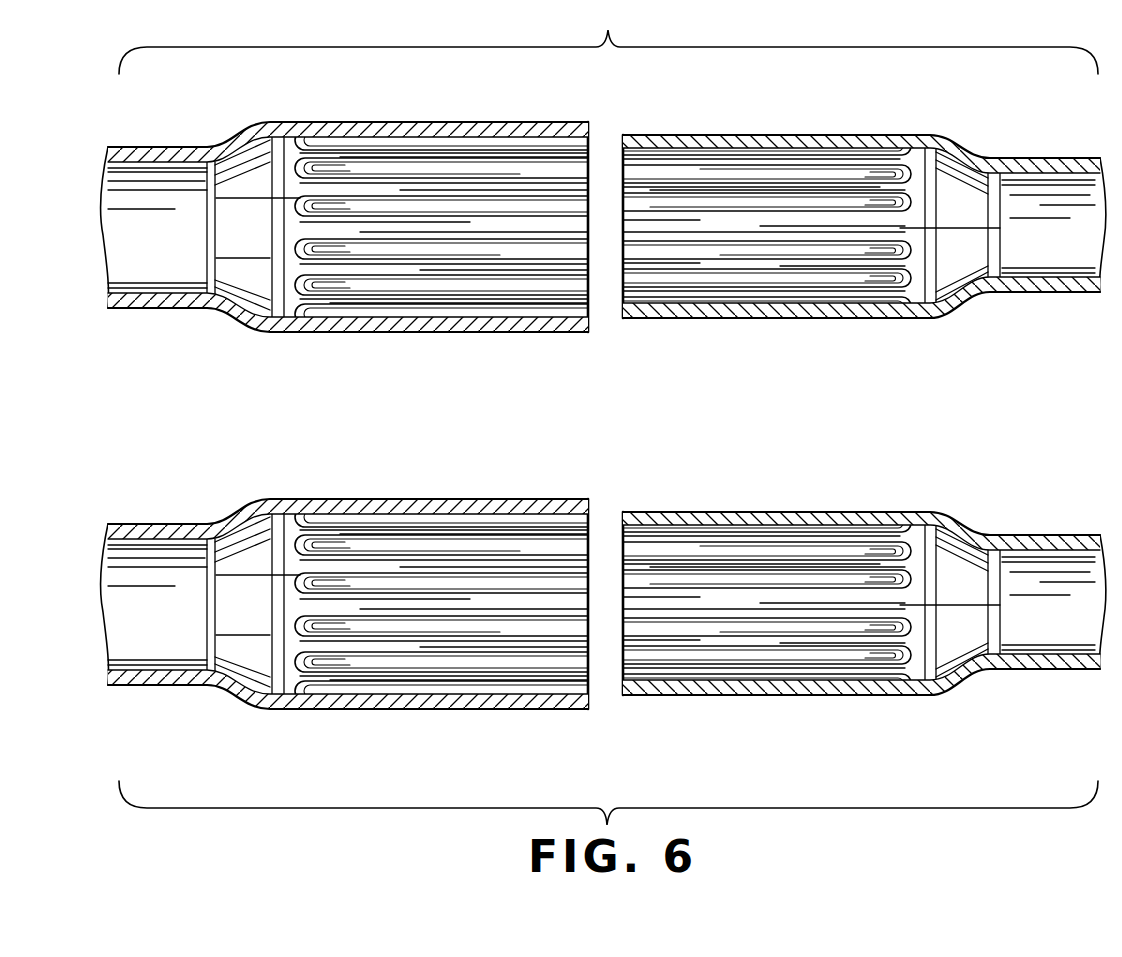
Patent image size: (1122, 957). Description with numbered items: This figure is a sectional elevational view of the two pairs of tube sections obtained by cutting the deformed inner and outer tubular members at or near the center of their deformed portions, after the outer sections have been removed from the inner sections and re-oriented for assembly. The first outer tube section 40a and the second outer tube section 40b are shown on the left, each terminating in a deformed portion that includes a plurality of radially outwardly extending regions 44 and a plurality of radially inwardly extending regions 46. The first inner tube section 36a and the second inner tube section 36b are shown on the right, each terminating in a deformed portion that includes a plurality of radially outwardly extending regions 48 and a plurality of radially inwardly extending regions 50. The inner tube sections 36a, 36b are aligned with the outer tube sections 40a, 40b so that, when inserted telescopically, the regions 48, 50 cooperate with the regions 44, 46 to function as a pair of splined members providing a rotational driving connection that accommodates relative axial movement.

The first inner tube section 36a is at (808, 319).
The second inner tube section 36b is at (790, 696).
The first outer tube section 40a is at (490, 333).
The second outer tube section 40b is at (493, 711).
The radially outwardly extending regions 44 is at (378, 124).
The radially inwardly extending regions 46 is at (300, 302).
The radially outwardly extending regions 48 is at (828, 134).
The radially inwardly extending regions 50 is at (903, 263).